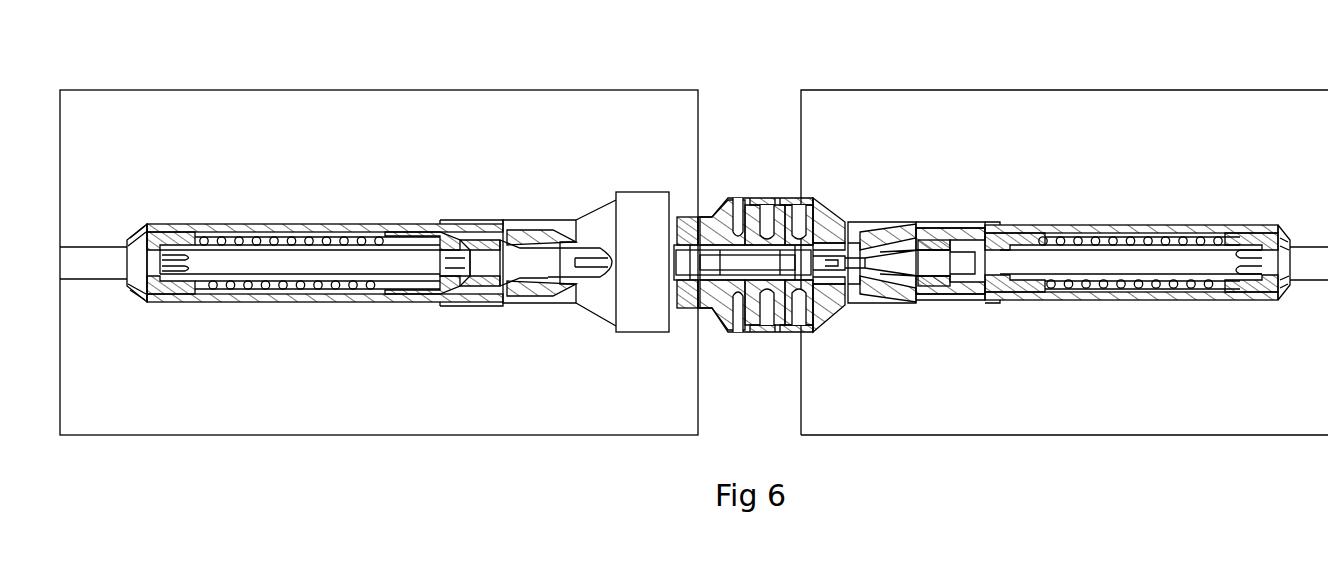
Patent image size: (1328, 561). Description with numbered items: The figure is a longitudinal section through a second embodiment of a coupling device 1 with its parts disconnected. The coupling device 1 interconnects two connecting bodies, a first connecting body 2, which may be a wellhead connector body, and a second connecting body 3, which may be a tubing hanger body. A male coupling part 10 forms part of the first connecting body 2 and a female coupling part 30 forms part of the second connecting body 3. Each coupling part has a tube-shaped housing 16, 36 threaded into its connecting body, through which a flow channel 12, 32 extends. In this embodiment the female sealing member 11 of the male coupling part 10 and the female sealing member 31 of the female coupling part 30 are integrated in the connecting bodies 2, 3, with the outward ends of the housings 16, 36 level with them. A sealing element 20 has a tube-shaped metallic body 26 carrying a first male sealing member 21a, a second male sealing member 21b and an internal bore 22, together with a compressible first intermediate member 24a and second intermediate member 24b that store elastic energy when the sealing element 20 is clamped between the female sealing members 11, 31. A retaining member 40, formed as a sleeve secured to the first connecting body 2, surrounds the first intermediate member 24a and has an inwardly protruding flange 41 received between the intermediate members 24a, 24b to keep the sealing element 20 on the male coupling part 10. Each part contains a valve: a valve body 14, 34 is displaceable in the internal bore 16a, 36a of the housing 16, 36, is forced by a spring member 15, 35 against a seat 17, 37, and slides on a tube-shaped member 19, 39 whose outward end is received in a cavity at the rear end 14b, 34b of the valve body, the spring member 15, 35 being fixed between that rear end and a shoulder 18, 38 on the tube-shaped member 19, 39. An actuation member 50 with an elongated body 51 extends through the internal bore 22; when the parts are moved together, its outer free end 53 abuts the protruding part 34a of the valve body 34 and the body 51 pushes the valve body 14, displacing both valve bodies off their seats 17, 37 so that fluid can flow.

The coupling device 1 is at (754, 72).
The first connecting body 2 is at (1000, 97).
The second connecting body 3 is at (470, 108).
The male coupling part 10 is at (1061, 248).
The female sealing member 11 is at (833, 222).
The flow channel 12 is at (1090, 272).
The valve body 14 is at (945, 285).
The rear end of valve body 14b is at (1002, 240).
The spring member 15 is at (1133, 286).
The tube-shaped housing 16 is at (1105, 233).
The internal bore 16a is at (1180, 290).
The seat 17 is at (930, 290).
The shoulder 18 is at (1222, 243).
The tube-shaped member 19 is at (1236, 285).
The sealing element 20 is at (745, 262).
The first male sealing member 21a is at (820, 222).
The second male sealing member 21b is at (685, 225).
The internal bore 22 is at (807, 287).
The first intermediate member 24a is at (805, 310).
The second intermediate member 24b is at (745, 305).
The tube-shaped metallic body 26 is at (714, 240).
The female coupling part 30 is at (371, 249).
The female sealing member 31 is at (562, 220).
The flow channel 32 is at (358, 265).
The valve body 34 is at (480, 290).
The protruding part 34a is at (590, 288).
The rear end of valve body 34b is at (405, 245).
The spring member 35 is at (282, 287).
The tube-shaped housing 36 is at (290, 232).
The internal bore 36a is at (240, 283).
The seat 37 is at (498, 292).
The shoulder 38 is at (185, 243).
The tube-shaped member 39 is at (190, 292).
The retaining member 40 is at (785, 198).
The inwardly protruding flange 41 is at (762, 330).
The actuation member 50 is at (672, 240).
The elongated body 51 is at (730, 285).
The outer free end 53 is at (676, 280).